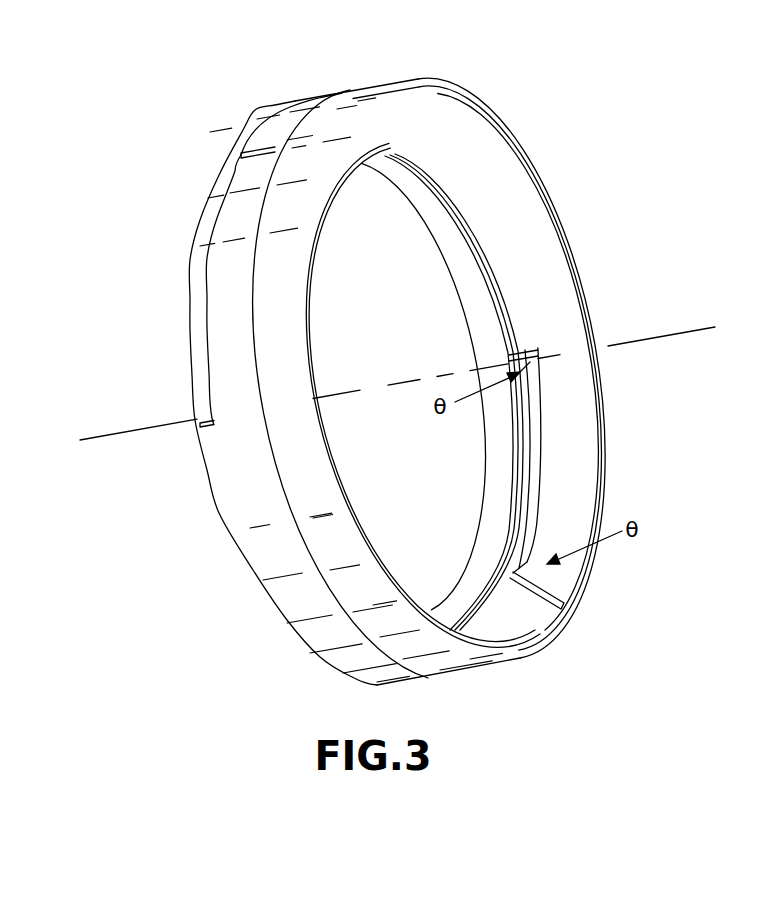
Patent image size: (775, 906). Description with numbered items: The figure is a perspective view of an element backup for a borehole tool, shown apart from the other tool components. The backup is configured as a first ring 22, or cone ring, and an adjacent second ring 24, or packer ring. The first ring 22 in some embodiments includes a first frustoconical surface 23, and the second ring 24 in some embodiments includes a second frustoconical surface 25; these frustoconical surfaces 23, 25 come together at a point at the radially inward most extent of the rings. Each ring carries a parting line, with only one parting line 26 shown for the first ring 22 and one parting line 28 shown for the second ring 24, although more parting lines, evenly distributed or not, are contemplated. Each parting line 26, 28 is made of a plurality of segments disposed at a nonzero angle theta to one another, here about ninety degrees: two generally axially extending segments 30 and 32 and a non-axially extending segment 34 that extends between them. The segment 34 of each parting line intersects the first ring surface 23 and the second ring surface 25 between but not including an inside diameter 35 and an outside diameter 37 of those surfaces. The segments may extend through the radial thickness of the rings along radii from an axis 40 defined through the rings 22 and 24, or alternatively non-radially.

The first ring 22 is at (458, 130).
The first frustoconical surface 23 is at (515, 207).
The second ring 24 is at (240, 502).
The second frustoconical surface 25 is at (480, 335).
The parting line 26 is at (556, 493).
The parting line 28 is at (178, 326).
The generally axially extending segment 30 is at (200, 428).
The generally axially extending segment 32 is at (262, 152).
The non-axially extending segment 34 is at (200, 282).
The inside diameter 35 is at (512, 462).
The outside diameter 37 is at (607, 437).
The axis 40 is at (656, 338).